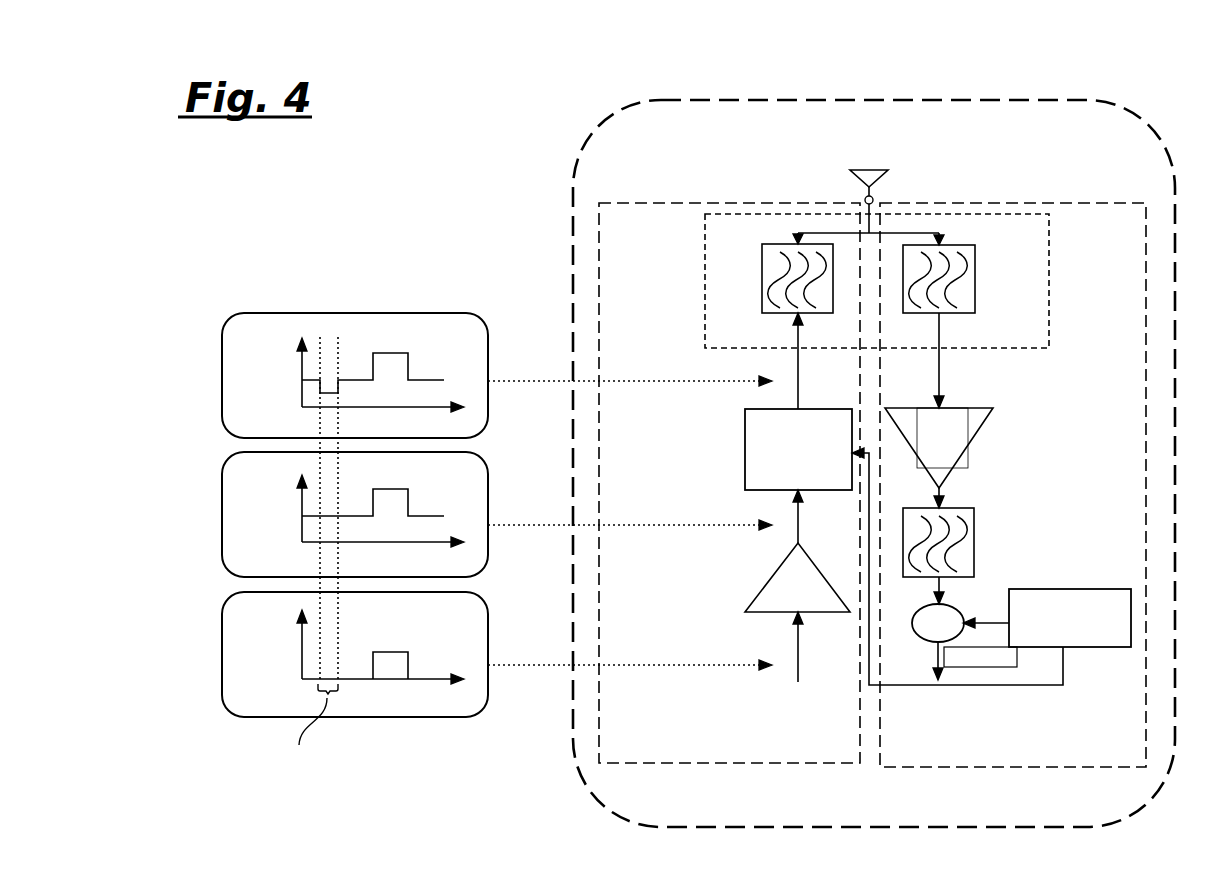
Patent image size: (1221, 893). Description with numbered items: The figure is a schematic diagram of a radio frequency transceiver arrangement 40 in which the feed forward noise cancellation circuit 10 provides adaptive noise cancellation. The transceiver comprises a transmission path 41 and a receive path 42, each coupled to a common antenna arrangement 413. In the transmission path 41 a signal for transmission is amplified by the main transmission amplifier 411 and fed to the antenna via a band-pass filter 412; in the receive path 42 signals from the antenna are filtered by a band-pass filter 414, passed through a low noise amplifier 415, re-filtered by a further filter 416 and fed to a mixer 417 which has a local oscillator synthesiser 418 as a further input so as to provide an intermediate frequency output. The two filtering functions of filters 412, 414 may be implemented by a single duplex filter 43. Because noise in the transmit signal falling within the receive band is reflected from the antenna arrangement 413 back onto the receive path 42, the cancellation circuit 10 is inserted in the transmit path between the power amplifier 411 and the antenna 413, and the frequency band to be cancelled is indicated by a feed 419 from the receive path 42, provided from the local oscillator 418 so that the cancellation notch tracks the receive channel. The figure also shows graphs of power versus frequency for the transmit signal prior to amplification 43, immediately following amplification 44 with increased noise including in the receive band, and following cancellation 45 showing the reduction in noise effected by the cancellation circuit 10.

The radio frequency transceiver arrangement 40 is at (874, 463).
The transmission path 41 is at (729, 483).
The receive path 42 is at (1013, 485).
The duplex filter 43 is at (613, 491).
The power versus frequency graph immediately following amplification 44 is at (475, 514).
The power versus frequency graph following cancellation 45 is at (475, 375).
The feed forward noise cancellation circuit 10 is at (783, 449).
The main transmission amplifier 411 is at (789, 586).
The band-pass filter 412 is at (778, 321).
The antenna arrangement 413 is at (876, 199).
The band-pass filter 414 is at (958, 320).
The low noise amplifier 415 is at (950, 458).
The filter 416 is at (960, 556).
The mixer 417 is at (964, 635).
The local oscillator synthesiser 418 is at (1047, 609).
The feed 419 is at (1062, 690).